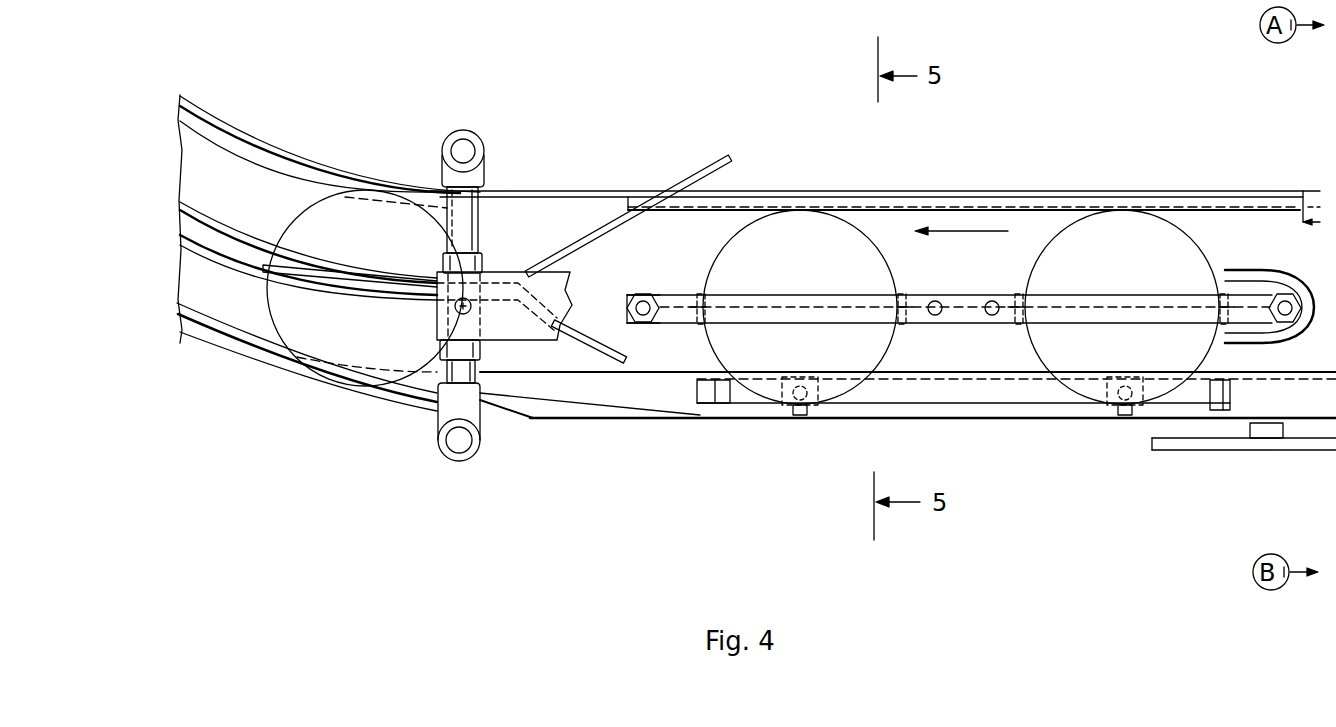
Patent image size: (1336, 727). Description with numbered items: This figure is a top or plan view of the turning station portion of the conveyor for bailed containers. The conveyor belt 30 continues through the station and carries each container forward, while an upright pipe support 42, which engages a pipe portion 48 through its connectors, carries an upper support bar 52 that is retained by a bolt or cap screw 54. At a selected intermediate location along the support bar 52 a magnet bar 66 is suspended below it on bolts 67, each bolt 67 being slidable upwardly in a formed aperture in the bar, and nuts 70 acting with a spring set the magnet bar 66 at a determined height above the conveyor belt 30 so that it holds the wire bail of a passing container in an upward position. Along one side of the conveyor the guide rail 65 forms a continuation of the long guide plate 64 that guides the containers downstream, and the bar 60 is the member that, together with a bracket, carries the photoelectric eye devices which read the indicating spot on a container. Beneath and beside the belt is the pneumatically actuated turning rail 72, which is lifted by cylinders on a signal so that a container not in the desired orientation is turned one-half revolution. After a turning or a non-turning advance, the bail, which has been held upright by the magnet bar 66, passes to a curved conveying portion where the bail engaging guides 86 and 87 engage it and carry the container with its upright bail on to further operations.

The conveyor belt 30 is at (240, 170).
The upright pipe support 42 is at (465, 147).
The pipe portion 48 is at (467, 228).
The support bar 52 is at (437, 323).
The bolt or cap screw 54 is at (471, 310).
The bar 60 is at (1213, 445).
The long guide plate 64 is at (1303, 221).
The guide rail 65 is at (913, 202).
The magnet bar 66 is at (958, 302).
The bolt 67 is at (644, 325).
The nut 70 is at (647, 294).
The turning rail 72 is at (938, 388).
The bail engaging guide 86 is at (578, 338).
The bail engaging guide 87 is at (688, 178).